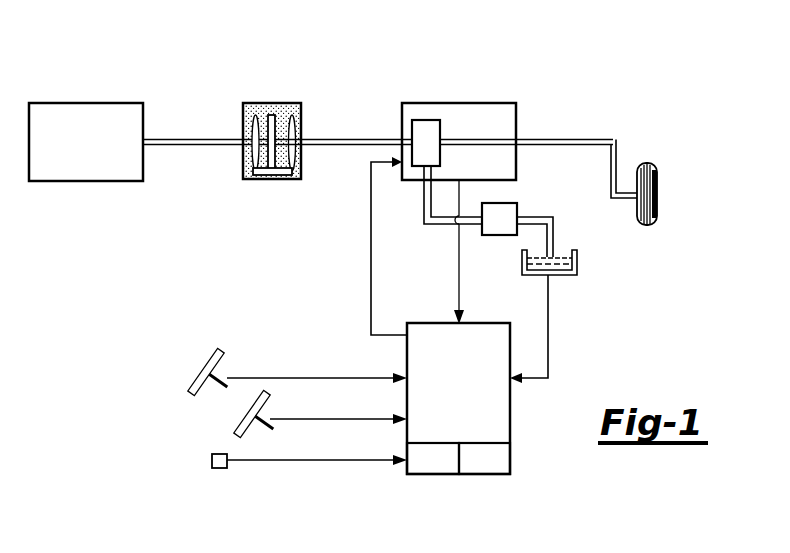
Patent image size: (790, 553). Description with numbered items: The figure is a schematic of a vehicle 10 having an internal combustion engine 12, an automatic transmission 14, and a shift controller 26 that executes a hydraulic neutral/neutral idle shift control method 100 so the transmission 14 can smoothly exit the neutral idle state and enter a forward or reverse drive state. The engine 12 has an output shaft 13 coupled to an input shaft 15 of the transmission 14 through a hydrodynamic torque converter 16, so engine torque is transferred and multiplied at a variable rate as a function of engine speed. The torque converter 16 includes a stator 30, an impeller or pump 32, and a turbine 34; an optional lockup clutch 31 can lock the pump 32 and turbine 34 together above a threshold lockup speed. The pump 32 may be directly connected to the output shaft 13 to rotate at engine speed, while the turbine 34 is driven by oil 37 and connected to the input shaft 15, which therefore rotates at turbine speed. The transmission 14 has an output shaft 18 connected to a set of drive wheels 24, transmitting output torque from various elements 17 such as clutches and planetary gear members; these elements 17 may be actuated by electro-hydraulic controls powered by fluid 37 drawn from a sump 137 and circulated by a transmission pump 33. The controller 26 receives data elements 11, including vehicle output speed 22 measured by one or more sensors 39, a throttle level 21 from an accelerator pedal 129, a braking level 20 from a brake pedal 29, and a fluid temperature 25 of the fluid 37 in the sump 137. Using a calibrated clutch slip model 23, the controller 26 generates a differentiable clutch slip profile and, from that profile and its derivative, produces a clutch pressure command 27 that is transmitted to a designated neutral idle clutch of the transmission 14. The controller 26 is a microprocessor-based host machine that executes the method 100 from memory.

The vehicle 10 is at (645, 62).
The data elements 11 is at (448, 252).
The internal combustion engine 12 is at (96, 146).
The output shaft 13 is at (170, 145).
The automatic transmission 14 is at (484, 103).
The input shaft 15 is at (350, 146).
The hydrodynamic torque converter 16 is at (252, 103).
The elements of the transmission 17 is at (434, 120).
The output shaft 18 is at (492, 146).
The braking level 20 is at (317, 369).
The throttle level 21 is at (338, 410).
The vehicle output speed 22 is at (317, 451).
The calibrated clutch slip model 23 is at (433, 458).
The drive wheels 24 is at (657, 196).
The fluid temperature 25 is at (548, 326).
The shift controller 26 is at (472, 387).
The clutch pressure command 27 is at (371, 248).
The brake pedal 29 is at (190, 380).
The stator 30 is at (271, 115).
The lockup clutch 31 is at (272, 175).
The pump 32 is at (246, 179).
The transmission pump 33 is at (517, 211).
The turbine 34 is at (298, 179).
The fluid 37 is at (292, 115).
The sensors 39 is at (222, 468).
The shift control method 100 is at (484, 458).
The accelerator pedal 129 is at (234, 422).
The sump 137 is at (577, 268).